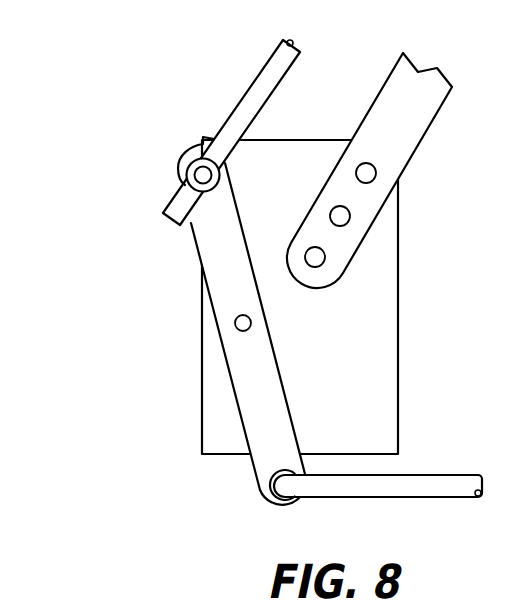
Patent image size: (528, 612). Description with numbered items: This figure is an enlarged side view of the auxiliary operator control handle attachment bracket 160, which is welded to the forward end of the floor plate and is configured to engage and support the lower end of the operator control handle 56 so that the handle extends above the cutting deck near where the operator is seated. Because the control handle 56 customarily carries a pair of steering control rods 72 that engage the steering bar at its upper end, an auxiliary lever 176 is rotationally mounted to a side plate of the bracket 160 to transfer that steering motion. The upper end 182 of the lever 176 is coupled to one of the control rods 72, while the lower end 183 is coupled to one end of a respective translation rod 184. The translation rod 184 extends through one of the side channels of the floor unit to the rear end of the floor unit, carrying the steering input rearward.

The operator control handle 56 is at (422, 142).
The steering control rod 72 is at (247, 95).
The auxiliary operator control handle attachment bracket 160 is at (402, 305).
The auxiliary lever 176 is at (281, 371).
The upper end of lever 182 is at (181, 166).
The lower end of lever 183 is at (262, 463).
The translation rod 184 is at (417, 475).